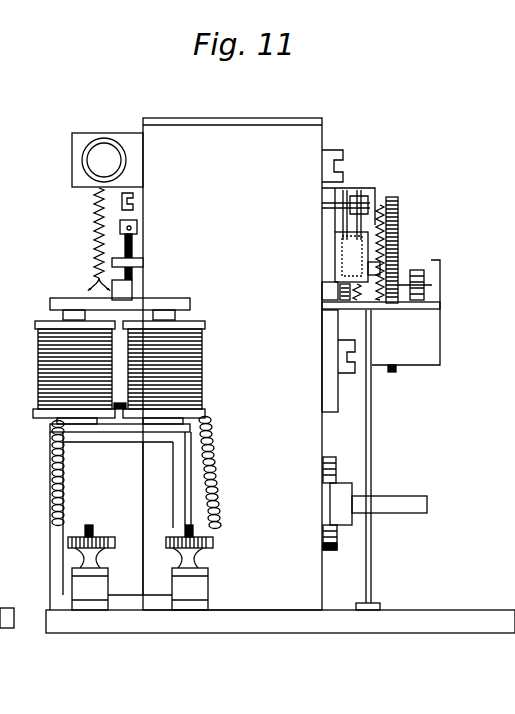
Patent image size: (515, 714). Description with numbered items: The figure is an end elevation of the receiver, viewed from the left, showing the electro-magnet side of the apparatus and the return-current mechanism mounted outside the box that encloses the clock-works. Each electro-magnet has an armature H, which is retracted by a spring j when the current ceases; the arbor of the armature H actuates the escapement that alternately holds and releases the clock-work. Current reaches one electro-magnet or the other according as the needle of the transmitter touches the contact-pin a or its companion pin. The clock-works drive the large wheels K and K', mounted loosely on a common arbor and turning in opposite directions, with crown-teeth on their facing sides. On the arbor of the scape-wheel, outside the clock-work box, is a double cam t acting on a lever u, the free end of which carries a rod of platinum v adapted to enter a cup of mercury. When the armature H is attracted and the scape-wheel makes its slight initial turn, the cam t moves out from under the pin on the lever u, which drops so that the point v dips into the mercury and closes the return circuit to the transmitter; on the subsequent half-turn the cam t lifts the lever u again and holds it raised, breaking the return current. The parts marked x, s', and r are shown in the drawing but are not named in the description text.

The spring j is at (93, 239).
The armature H is at (120, 298).
The contact-pin a is at (114, 369).
The lever u is at (342, 200).
The cam t is at (366, 208).
The rod of platinum v is at (335, 216).
The block x is at (351, 257).
The large wheel K is at (341, 308).
The large wheel K' is at (401, 250).
The spring s' is at (380, 270).
The pinion r is at (417, 270).